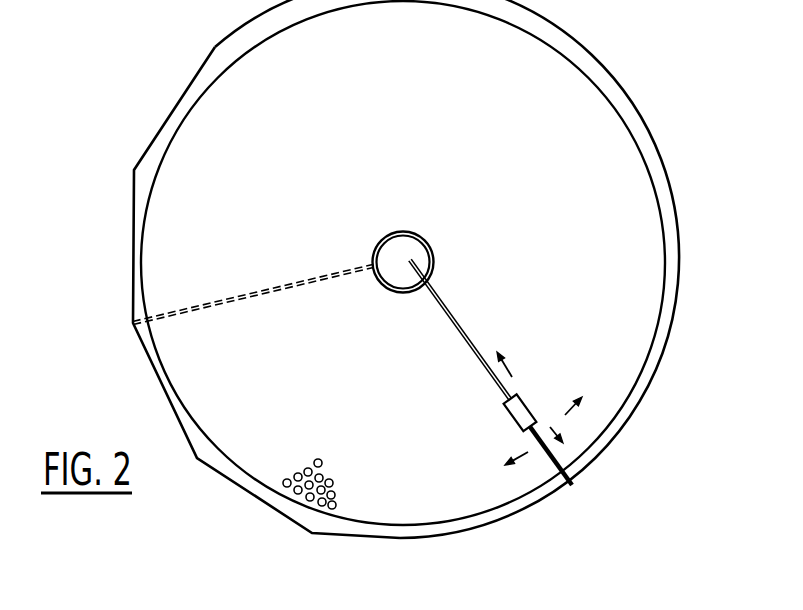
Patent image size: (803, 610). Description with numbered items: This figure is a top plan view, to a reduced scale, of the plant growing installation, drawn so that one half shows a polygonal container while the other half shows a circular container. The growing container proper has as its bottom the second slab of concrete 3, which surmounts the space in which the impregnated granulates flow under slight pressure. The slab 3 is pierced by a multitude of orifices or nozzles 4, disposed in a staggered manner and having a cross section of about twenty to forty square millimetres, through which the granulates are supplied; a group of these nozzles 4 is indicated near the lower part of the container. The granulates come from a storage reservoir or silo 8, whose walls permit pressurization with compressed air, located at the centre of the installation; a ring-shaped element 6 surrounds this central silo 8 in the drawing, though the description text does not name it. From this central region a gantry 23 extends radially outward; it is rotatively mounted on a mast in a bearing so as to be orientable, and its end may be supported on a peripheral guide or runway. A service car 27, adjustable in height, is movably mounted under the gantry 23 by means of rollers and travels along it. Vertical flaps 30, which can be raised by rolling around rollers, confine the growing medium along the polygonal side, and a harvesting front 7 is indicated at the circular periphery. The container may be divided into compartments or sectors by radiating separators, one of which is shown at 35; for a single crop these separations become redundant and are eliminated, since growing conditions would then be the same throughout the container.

The vertical flaps 30 is at (175, 108).
The harvesting front 7 is at (672, 222).
The second slab of concrete 3 is at (587, 210).
The hub 6 is at (373, 250).
The storage reservoir or silo 8 is at (415, 250).
The separator 35 is at (252, 293).
The gantry 23 is at (465, 333).
The service car 27 is at (527, 400).
The orifices or nozzles 4 is at (318, 463).